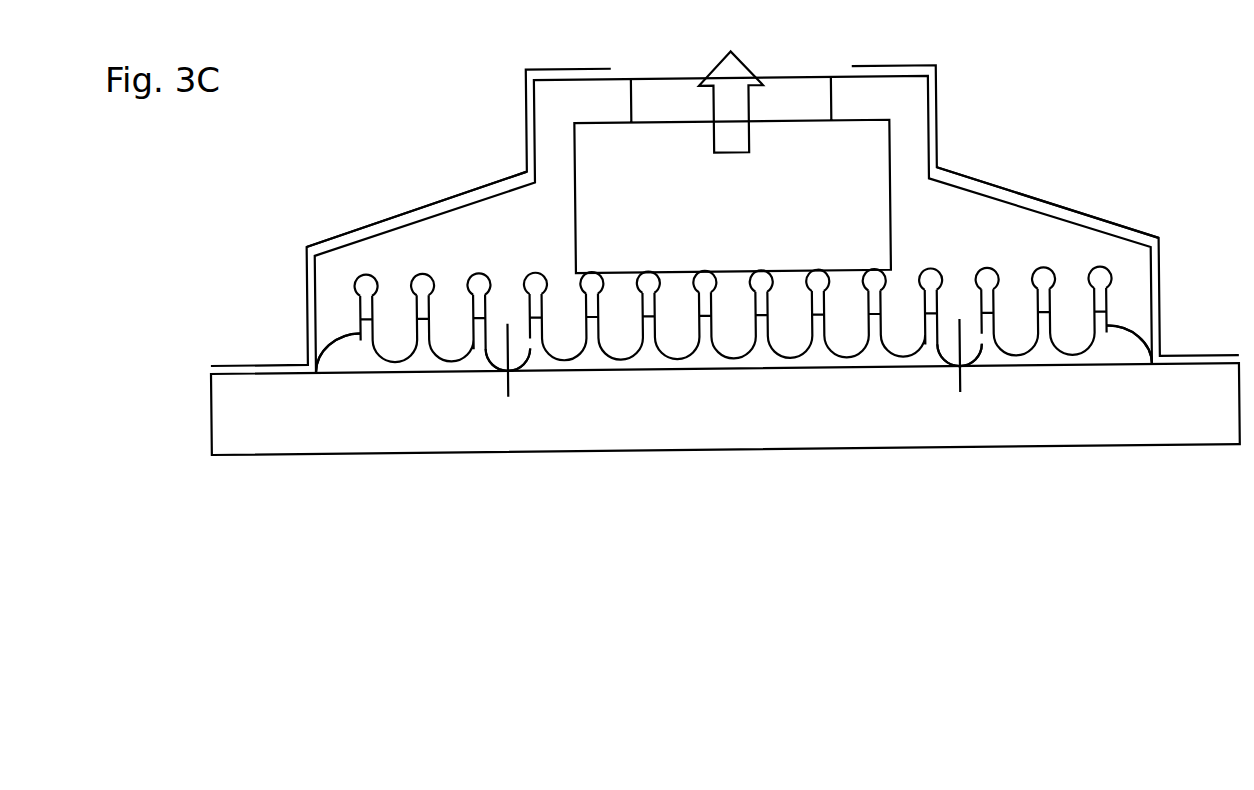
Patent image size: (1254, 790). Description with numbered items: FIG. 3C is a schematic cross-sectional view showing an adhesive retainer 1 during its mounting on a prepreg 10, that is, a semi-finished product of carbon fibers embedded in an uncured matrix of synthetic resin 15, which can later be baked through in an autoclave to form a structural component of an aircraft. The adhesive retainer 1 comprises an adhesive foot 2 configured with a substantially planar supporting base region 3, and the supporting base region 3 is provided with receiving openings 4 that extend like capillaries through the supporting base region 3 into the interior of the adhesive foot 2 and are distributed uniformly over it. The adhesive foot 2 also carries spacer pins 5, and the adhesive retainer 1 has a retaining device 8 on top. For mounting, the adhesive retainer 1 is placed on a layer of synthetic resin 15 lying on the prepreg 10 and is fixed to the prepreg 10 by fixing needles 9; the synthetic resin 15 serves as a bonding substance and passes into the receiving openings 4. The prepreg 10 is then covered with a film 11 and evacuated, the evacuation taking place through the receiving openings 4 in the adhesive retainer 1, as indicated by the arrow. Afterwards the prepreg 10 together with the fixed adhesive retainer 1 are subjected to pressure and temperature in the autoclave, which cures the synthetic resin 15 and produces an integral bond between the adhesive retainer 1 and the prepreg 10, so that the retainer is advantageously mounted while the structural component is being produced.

The adhesive retainer 1 is at (521, 92).
The adhesive foot 2 is at (972, 213).
The supporting base region 3 is at (1133, 332).
The receiving openings 4 is at (1047, 343).
The spacer pins 5 is at (514, 366).
The retaining device 8 is at (806, 92).
The fixing needles 9 is at (508, 387).
The prepreg 10 is at (226, 426).
The film 11 is at (421, 212).
The synthetic resin 15 is at (358, 366).